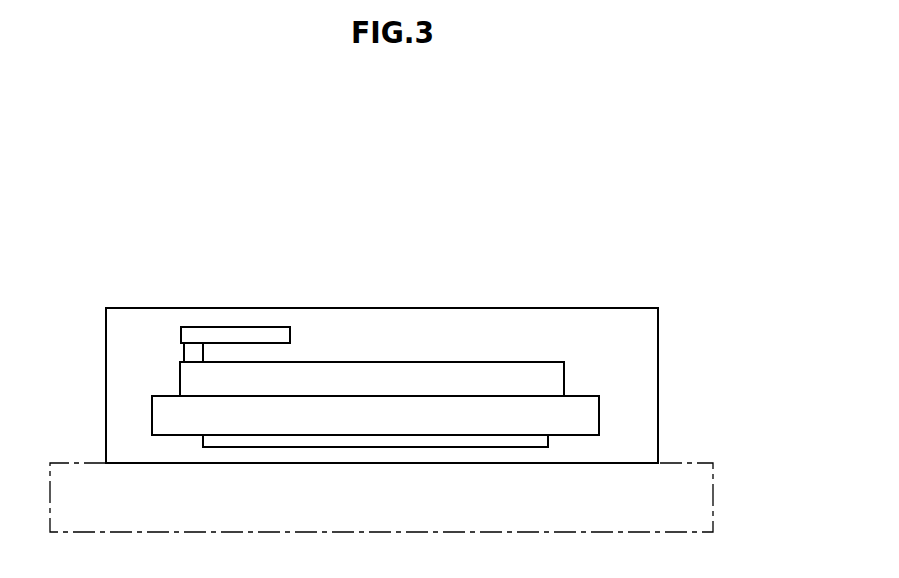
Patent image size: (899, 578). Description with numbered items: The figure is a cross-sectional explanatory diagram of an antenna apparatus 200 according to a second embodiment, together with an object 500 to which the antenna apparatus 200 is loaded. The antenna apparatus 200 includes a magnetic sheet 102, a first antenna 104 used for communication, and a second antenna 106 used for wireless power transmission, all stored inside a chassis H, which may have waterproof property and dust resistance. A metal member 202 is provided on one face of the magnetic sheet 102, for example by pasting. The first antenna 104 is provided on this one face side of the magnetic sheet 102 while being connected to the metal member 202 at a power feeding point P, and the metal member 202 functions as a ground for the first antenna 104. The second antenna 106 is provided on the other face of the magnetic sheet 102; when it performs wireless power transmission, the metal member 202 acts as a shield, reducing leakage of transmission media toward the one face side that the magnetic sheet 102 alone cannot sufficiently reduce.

The antenna apparatus 200 is at (712, 279).
The chassis H is at (534, 308).
The first antenna 104 is at (180, 333).
The power feeding point P is at (185, 352).
The metal member 202 is at (564, 381).
The magnetic sheet 102 is at (599, 417).
The second antenna 106 is at (548, 442).
The object 500 is at (713, 498).